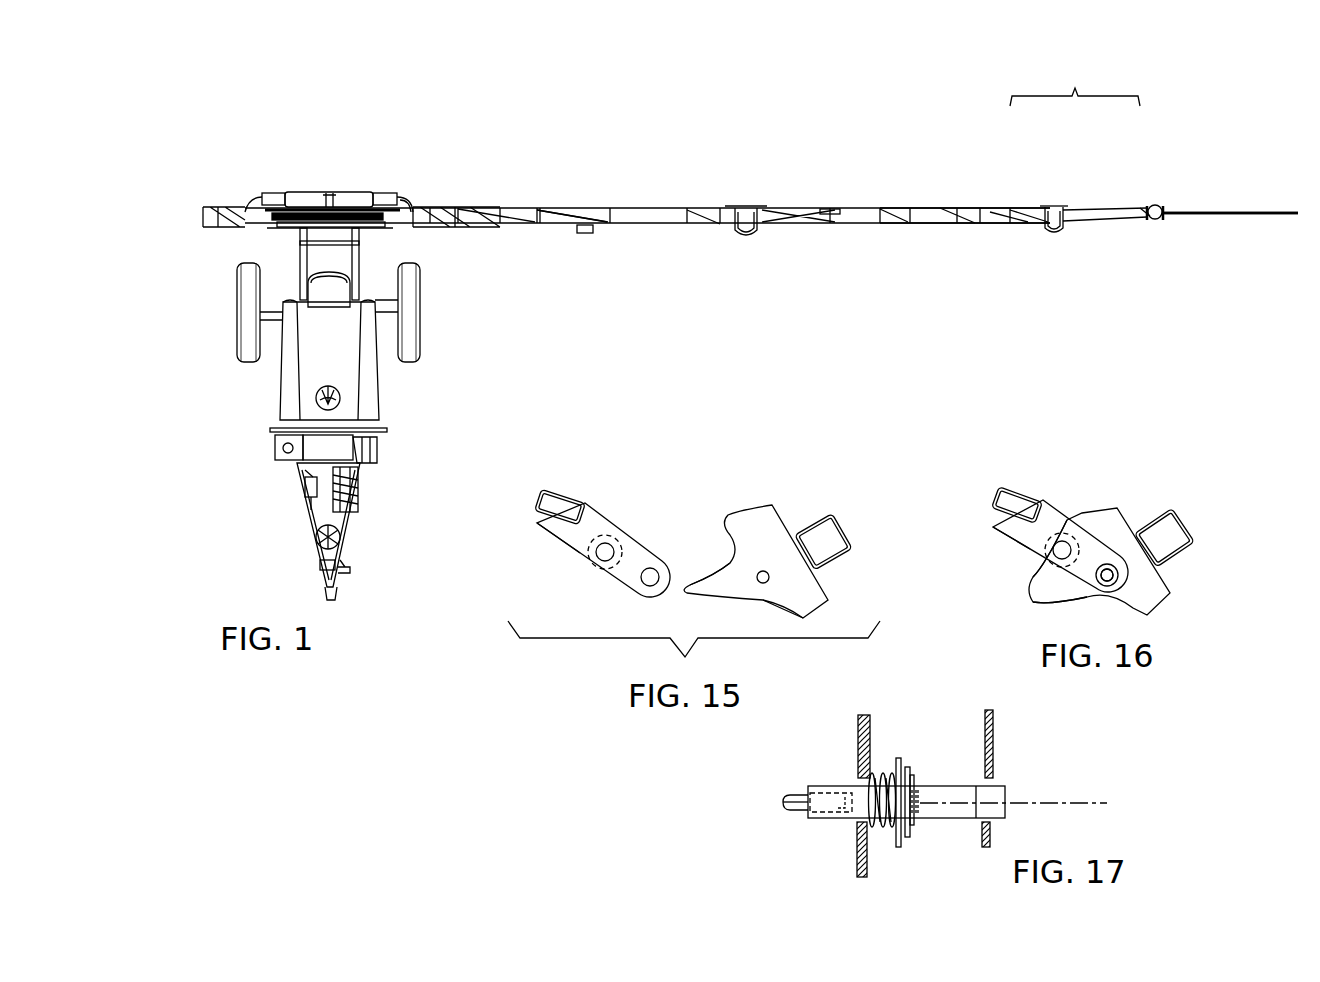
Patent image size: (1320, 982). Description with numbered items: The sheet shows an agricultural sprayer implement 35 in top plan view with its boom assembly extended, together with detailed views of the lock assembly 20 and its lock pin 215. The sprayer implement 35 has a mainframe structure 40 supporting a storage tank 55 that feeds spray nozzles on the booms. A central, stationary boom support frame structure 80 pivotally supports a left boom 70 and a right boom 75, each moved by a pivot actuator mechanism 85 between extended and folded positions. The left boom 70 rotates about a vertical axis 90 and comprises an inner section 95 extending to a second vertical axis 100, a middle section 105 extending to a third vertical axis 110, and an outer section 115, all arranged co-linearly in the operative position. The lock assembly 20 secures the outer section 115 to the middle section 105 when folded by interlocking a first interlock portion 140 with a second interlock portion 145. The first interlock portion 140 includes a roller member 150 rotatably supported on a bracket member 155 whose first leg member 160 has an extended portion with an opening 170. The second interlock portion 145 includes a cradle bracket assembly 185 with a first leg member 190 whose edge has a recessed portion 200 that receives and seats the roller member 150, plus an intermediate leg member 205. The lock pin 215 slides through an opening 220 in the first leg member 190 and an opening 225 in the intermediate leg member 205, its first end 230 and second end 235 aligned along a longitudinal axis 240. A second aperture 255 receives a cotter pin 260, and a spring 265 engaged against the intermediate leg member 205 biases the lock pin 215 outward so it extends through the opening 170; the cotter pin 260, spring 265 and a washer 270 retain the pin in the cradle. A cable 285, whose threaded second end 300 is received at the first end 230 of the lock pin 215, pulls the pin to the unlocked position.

In FIG. 1, the lock assembly 20 is at (1076, 90).
In FIG. 1, the agricultural sprayer implement 35 is at (332, 414).
In FIG. 1, the mainframe structure 40 is at (300, 515).
In FIG. 1, the storage tank 55 is at (375, 393).
In FIG. 1, the left boom 70 is at (642, 146).
In FIG. 1, the right boom 75 is at (217, 183).
In FIG. 1, the boom support frame structure 80 is at (344, 170).
In FIG. 1, the pivot actuator mechanism 85 is at (393, 183).
In FIG. 1, the vertical axis 90 is at (418, 198).
In FIG. 1, the inner section 95 is at (544, 238).
In FIG. 1, the second vertical axis 100 is at (763, 198).
In FIG. 1, the middle section 105 is at (905, 238).
In FIG. 15, the middle section 105 is at (827, 490).
In FIG. 16, the middle section 105 is at (1187, 517).
In FIG. 1, the third vertical axis 110 is at (1060, 198).
In FIG. 1, the outer section 115 is at (1175, 198).
In FIG. 15, the outer section 115 is at (558, 480).
In FIG. 16, the outer section 115 is at (985, 485).
In FIG. 1, the first interlock portion 140 is at (1150, 203).
In FIG. 15, the first interlock portion 140 is at (580, 533).
In FIG. 16, the first interlock portion 140 is at (1067, 564).
In FIG. 1, the second interlock portion 145 is at (957, 203).
In FIG. 15, the second interlock portion 145 is at (778, 512).
In FIG. 16, the second interlock portion 145 is at (1092, 565).
In FIG. 15, the roller member 150 is at (595, 533).
In FIG. 16, the roller member 150 is at (1053, 530).
In FIG. 15, the bracket member 155 is at (557, 548).
In FIG. 16, the bracket member 155 is at (1003, 540).
In FIG. 15, the first leg member 160 is at (610, 552).
In FIG. 16, the first leg member 160 is at (1084, 578).
In FIG. 15, the opening 170 is at (650, 590).
In FIG. 16, the opening 170 is at (1093, 578).
In FIG. 15, the cradle bracket assembly 185 is at (733, 497).
In FIG. 16, the cradle bracket assembly 185 is at (1088, 512).
In FIG. 17, the cradle bracket assembly 185 is at (1000, 730).
In FIG. 15, the first leg member 190 is at (765, 601).
In FIG. 16, the first leg member 190 is at (1065, 595).
In FIG. 17, the first leg member 190 is at (993, 760).
In FIG. 15, the recessed portion 200 is at (718, 562).
In FIG. 16, the recessed portion 200 is at (1035, 570).
In FIG. 17, the intermediate leg member 205 is at (870, 738).
In FIG. 16, the lock pin 215 is at (1119, 577).
In FIG. 17, the lock pin 215 is at (922, 789).
In FIG. 17, the opening 220 is at (995, 782).
In FIG. 17, the opening 225 is at (854, 824).
In FIG. 17, the first end 230 is at (847, 773).
In FIG. 17, the second end 235 is at (975, 824).
In FIG. 17, the longitudinal axis 240 is at (1087, 805).
In FIG. 17, the second aperture 255 is at (923, 787).
In FIG. 17, the cotter pin 260 is at (911, 832).
In FIG. 17, the spring 265 is at (877, 834).
In FIG. 17, the washer 270 is at (912, 784).
In FIG. 17, the cable 285 is at (797, 810).
In FIG. 17, the second end 300 is at (792, 784).